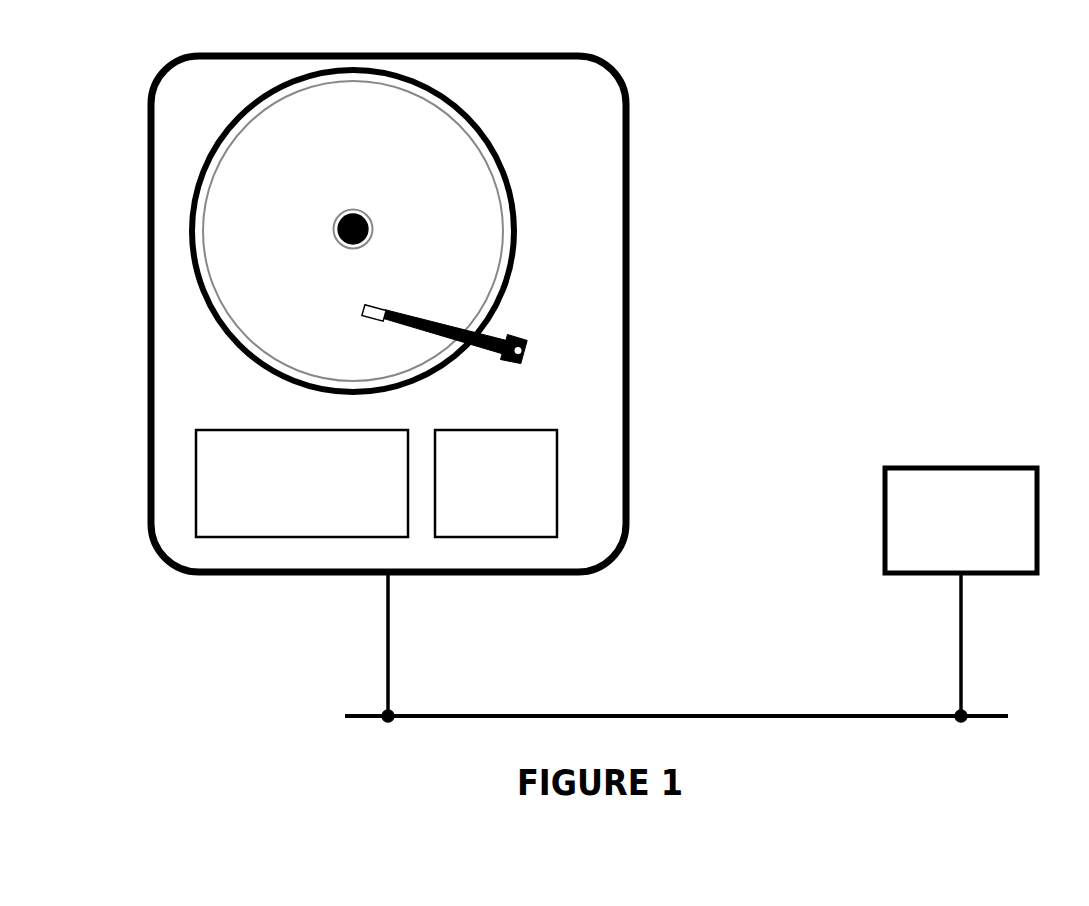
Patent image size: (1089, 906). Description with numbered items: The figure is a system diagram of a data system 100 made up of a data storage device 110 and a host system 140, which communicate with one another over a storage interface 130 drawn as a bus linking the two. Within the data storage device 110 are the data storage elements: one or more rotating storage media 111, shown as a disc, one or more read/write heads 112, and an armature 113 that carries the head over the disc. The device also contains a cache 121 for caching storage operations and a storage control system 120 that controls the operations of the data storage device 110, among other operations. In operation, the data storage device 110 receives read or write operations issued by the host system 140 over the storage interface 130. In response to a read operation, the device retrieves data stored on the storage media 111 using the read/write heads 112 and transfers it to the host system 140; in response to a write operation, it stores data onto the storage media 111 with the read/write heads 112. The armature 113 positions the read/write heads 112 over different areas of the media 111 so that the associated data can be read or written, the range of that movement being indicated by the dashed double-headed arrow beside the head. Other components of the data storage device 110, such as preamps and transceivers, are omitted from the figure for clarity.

The data system 100 is at (848, 176).
The data storage device 110 is at (537, 44).
The rotating storage media 111 is at (526, 236).
The read/write head 112 is at (368, 355).
The armature 113 is at (540, 356).
The storage control system 120 is at (285, 519).
The cache 121 is at (480, 508).
The storage interface 130 is at (698, 716).
The host system 140 is at (943, 558).